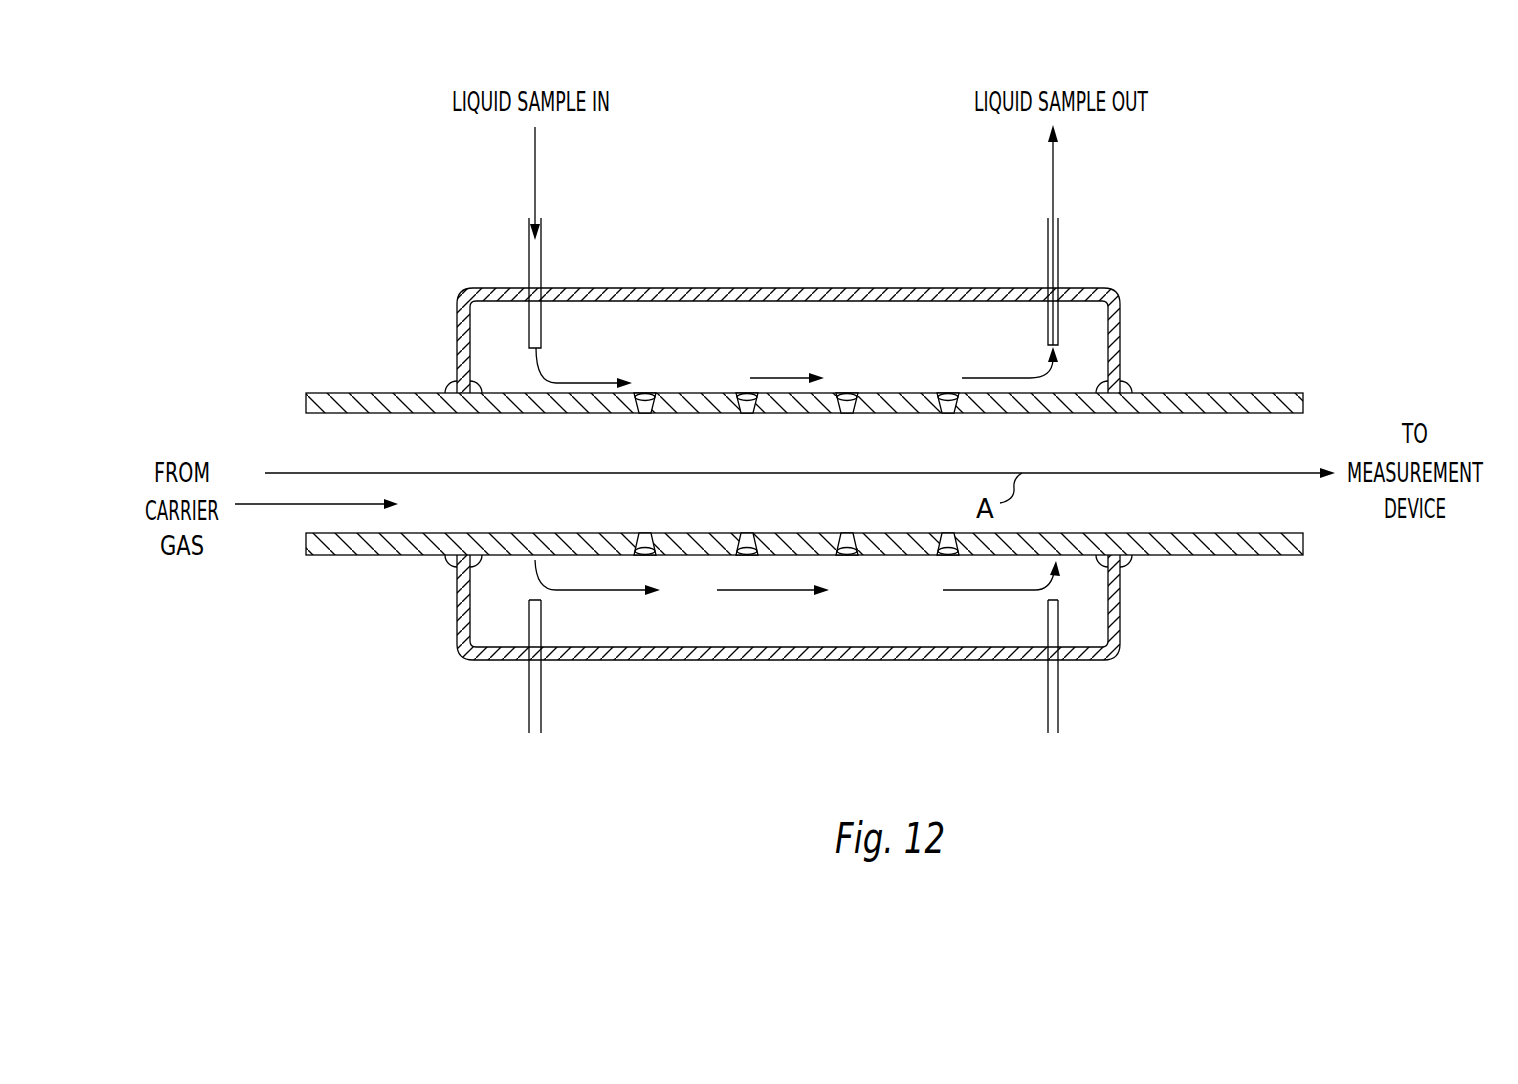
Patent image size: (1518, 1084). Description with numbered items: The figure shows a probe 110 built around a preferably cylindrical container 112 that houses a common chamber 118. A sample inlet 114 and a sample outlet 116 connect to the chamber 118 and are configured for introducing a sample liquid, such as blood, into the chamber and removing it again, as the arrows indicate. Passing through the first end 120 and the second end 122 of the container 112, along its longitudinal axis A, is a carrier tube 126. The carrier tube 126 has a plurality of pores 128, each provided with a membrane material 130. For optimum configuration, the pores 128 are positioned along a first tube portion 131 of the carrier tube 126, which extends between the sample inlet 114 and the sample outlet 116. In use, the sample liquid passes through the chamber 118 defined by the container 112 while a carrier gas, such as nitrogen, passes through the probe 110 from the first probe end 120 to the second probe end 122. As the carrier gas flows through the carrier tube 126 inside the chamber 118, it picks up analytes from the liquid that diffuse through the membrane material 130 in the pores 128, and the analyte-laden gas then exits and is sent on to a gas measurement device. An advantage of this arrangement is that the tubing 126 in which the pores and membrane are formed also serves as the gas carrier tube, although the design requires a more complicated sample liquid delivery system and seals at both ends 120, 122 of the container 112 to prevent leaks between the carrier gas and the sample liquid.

The probe 110 is at (1297, 158).
The cylindrical container 112 is at (722, 286).
The sample inlet 114 is at (541, 258).
The sample outlet 116 is at (1058, 252).
The common chamber 118 is at (775, 663).
The first end 120 is at (457, 347).
The right housing wall 122 is at (1120, 327).
The carrier tube 126 is at (1235, 556).
The pores 128 is at (664, 540).
The membrane material 130 is at (646, 540).
The first tube portion 131 is at (1040, 360).